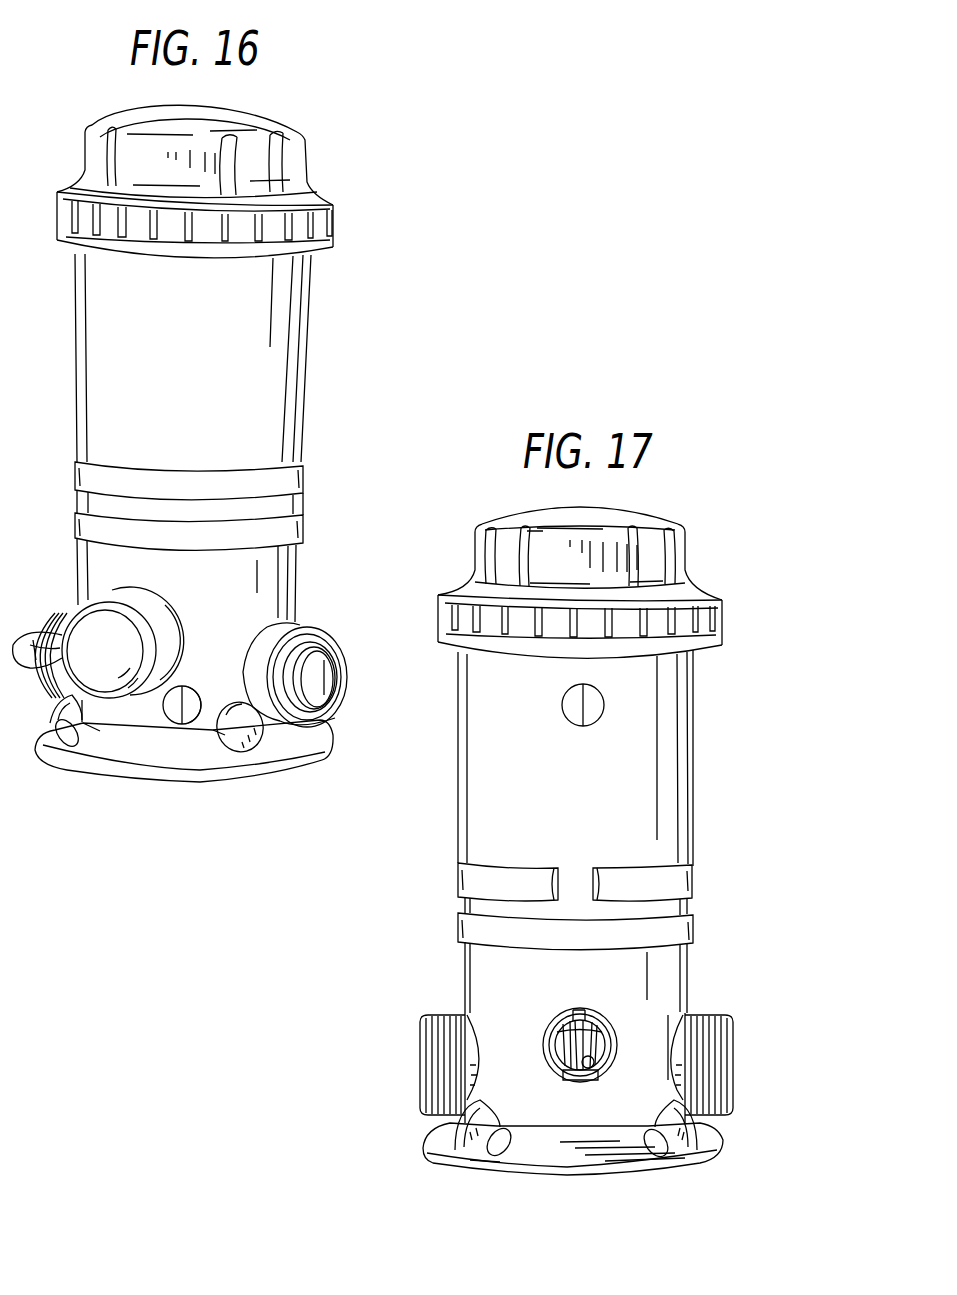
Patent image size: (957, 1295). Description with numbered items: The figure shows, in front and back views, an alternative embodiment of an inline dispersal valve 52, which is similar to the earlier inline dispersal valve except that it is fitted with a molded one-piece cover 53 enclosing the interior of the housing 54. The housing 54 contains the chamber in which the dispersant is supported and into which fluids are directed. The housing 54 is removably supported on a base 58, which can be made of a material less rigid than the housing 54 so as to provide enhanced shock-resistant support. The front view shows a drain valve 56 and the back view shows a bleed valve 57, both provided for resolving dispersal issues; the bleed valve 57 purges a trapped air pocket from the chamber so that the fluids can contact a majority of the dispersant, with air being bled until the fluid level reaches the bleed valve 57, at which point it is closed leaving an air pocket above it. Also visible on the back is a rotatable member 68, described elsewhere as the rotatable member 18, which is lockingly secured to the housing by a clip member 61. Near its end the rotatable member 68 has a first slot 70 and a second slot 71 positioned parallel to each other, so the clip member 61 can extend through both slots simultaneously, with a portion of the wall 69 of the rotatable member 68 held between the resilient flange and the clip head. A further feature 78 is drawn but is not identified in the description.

In FIG. 16, the inline dispersal valve 52 is at (313, 112).
In FIG. 17, the inline dispersal valve 52 is at (745, 596).
In FIG. 16, the molded one-piece cover 53 is at (322, 192).
In FIG. 17, the molded one-piece cover 53 is at (700, 606).
In FIG. 16, the housing 54 is at (305, 372).
In FIG. 17, the housing 54 is at (458, 771).
In FIG. 16, the rotatable member 18 is at (95, 625).
In FIG. 16, the base 58 is at (115, 750).
In FIG. 17, the base 58 is at (563, 1155).
In FIG. 16, the drain valve 56 is at (187, 704).
In FIG. 17, the bleed valve 57 is at (604, 704).
In FIG. 17, the rotatable member 68 is at (617, 1023).
In FIG. 17, the second slot 71 is at (580, 1014).
In FIG. 17, the wall of the rotatable member 69 is at (545, 1041).
In FIG. 17, the clip member 61 is at (580, 1044).
In FIG. 17, the first slot 70 is at (597, 1072).
In FIG. 17, the rim 78 is at (560, 1077).